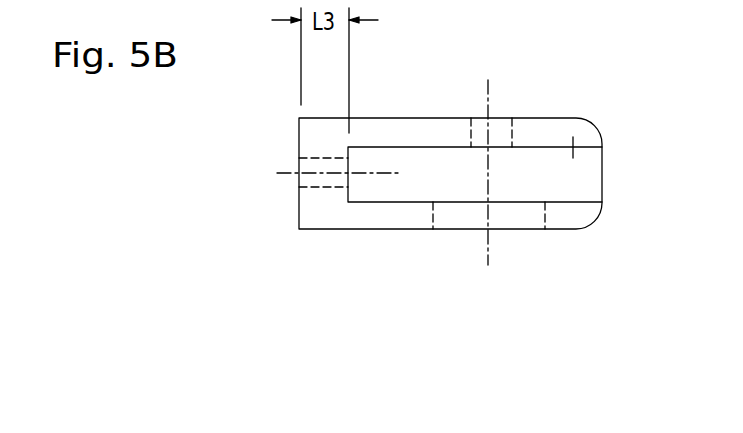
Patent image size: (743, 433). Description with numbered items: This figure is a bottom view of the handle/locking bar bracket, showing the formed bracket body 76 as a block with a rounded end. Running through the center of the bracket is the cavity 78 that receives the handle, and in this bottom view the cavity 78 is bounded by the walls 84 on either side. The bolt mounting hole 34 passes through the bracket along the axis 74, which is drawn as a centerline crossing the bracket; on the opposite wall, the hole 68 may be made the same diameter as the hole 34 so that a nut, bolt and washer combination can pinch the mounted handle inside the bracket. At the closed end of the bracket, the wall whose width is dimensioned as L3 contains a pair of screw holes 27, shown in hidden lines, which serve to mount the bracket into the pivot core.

The screw holes 27 is at (310, 179).
The bolt mounting hole 34 is at (497, 118).
The hole 68 is at (518, 213).
The axis 74 is at (488, 80).
The tip body 76 is at (594, 124).
The cavity 78 is at (578, 177).
The walls 84 is at (413, 130).